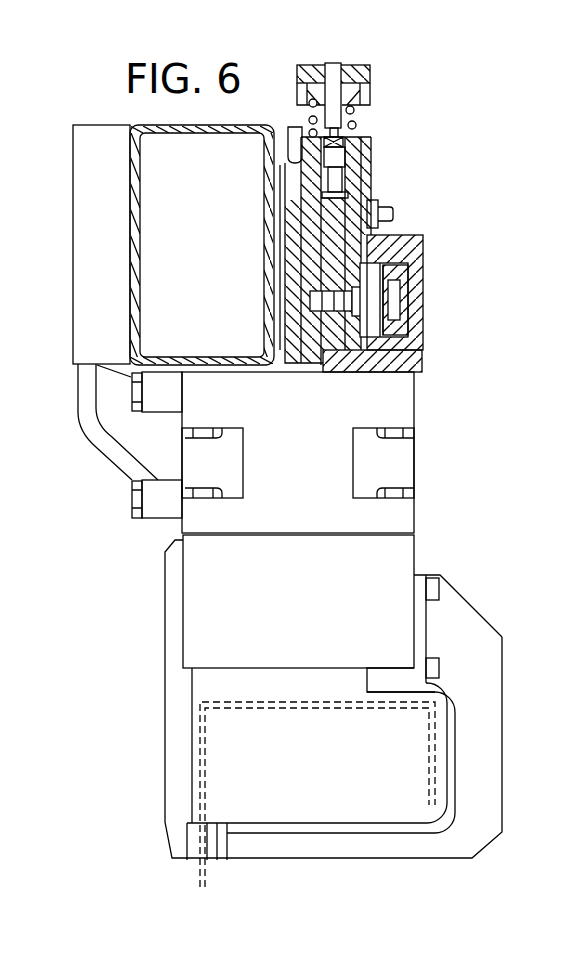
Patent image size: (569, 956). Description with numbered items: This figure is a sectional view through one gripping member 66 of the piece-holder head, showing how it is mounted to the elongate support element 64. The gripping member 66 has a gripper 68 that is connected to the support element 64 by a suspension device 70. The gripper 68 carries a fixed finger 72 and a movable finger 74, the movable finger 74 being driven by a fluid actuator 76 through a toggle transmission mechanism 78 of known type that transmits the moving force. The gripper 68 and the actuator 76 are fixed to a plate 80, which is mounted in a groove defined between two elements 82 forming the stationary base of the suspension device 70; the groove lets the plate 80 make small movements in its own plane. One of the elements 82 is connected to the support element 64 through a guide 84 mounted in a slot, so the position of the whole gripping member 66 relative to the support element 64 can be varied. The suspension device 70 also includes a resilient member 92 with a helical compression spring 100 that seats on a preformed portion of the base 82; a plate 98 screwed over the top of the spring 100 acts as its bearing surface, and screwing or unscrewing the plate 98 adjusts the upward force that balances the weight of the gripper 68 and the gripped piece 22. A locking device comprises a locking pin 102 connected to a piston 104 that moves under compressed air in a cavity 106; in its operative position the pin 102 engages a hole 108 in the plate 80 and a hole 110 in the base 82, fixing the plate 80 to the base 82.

The piece 22 is at (205, 798).
The support element 64 is at (172, 135).
The gripping member 66 is at (440, 408).
The gripper 68 is at (447, 555).
The suspension device 70 is at (408, 210).
The fixed finger 72 is at (180, 768).
The movable finger 74 is at (477, 805).
The fluid actuator 76 is at (335, 482).
The toggle transmission mechanism 78 is at (398, 627).
The plate 80 is at (372, 236).
The elements forming stationary base 82 is at (310, 220).
The guide 84 is at (322, 214).
The resilient member 92 is at (395, 100).
The plate 98 is at (362, 72).
The helical compression spring 100 is at (355, 132).
The locking pin 102 is at (341, 368).
The piston 104 is at (390, 268).
The cavity 106 is at (395, 332).
The hole 108 is at (345, 280).
The hole 110 is at (378, 270).